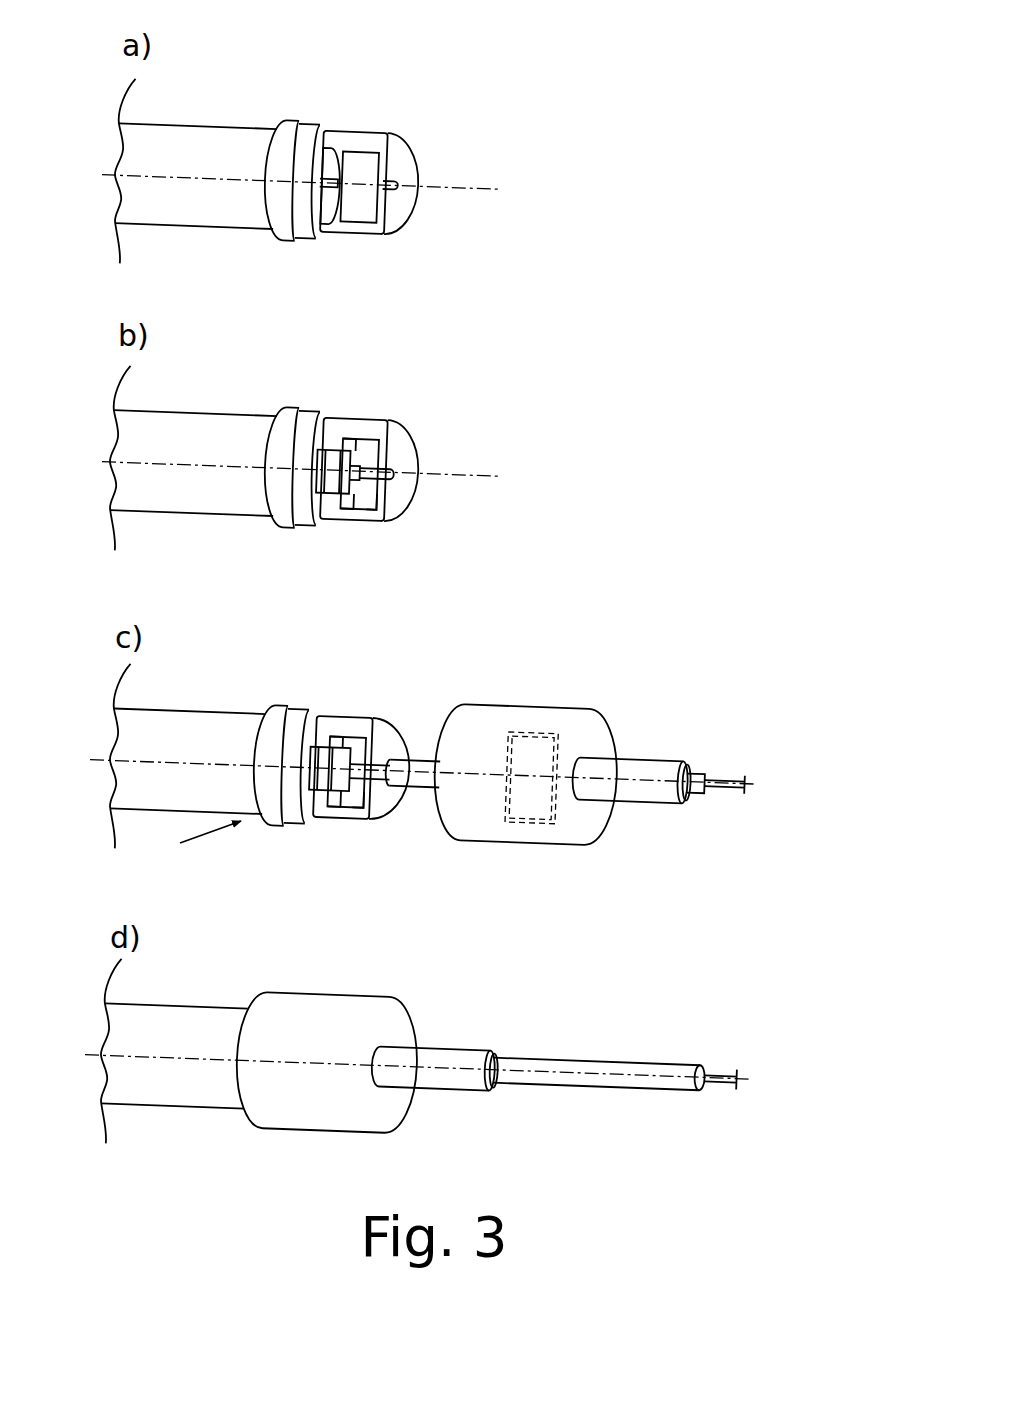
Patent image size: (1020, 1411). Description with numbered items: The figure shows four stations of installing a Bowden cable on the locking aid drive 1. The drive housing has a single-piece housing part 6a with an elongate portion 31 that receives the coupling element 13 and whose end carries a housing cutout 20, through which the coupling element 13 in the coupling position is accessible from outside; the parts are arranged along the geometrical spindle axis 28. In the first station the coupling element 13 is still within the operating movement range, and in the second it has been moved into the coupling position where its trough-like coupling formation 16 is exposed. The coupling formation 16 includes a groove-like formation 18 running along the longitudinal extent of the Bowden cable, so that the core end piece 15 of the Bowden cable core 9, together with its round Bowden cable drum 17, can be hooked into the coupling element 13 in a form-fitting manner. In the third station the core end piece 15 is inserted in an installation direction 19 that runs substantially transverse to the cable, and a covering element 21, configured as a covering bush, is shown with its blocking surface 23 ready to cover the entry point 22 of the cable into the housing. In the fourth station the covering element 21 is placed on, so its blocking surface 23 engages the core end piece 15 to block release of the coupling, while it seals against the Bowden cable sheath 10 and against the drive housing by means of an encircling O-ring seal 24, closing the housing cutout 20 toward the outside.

The locking aid drive 1 is at (440, 606).
The housing part 6a is at (208, 581).
The Bowden cable core 9 is at (413, 760).
The Bowden cable sheath 10 is at (418, 768).
The coupling element 13 is at (363, 447).
The core end piece 15 is at (354, 795).
The coupling formation 16 is at (341, 489).
The Bowden cable drum 17 is at (333, 787).
The groove-like formation 18 is at (385, 523).
The installation direction 19 is at (210, 837).
The housing cutout 20 is at (357, 163).
The covering element 21 is at (426, 917).
The entry point 22 is at (389, 782).
The blocking surface 23 is at (530, 757).
The seal 24 is at (297, 120).
The geometrical spindle axis 28 is at (480, 190).
The elongate portion 31 is at (240, 155).